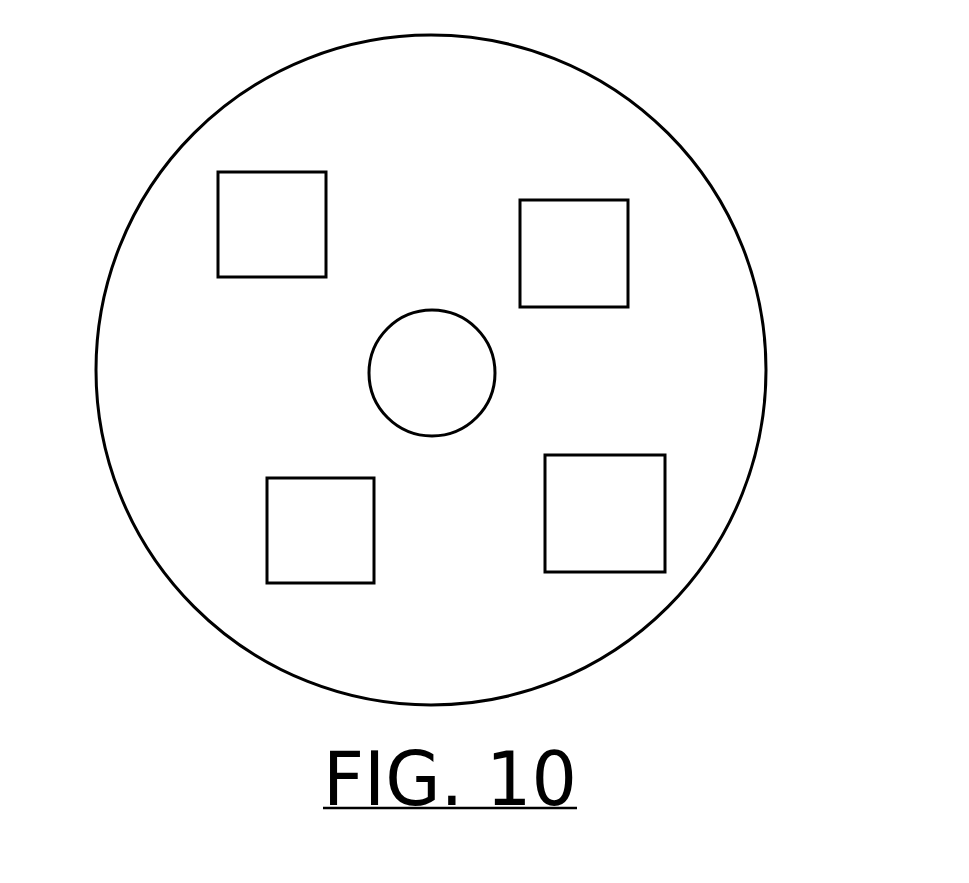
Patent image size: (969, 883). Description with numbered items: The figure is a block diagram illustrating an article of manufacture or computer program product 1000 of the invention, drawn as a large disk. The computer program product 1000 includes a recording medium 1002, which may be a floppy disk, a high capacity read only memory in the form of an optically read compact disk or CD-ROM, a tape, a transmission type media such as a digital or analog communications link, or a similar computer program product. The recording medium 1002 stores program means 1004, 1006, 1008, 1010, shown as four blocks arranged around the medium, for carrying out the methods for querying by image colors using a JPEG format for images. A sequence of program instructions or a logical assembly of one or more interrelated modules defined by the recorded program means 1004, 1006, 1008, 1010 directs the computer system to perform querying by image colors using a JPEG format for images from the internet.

The computer program product 1000 is at (712, 150).
The recording medium 1002 is at (167, 203).
The program means 1004 is at (574, 253).
The program means 1006 is at (605, 513).
The program means 1008 is at (320, 530).
The program means 1010 is at (272, 224).